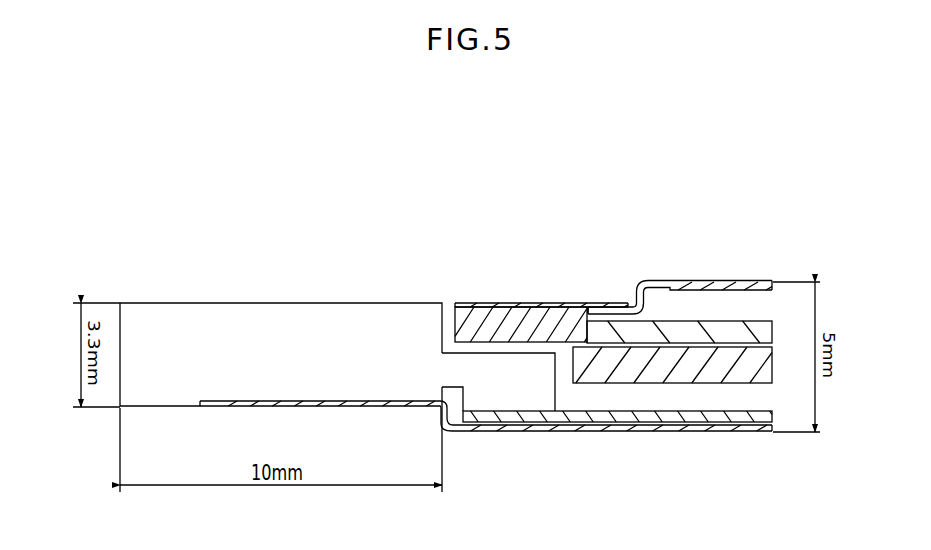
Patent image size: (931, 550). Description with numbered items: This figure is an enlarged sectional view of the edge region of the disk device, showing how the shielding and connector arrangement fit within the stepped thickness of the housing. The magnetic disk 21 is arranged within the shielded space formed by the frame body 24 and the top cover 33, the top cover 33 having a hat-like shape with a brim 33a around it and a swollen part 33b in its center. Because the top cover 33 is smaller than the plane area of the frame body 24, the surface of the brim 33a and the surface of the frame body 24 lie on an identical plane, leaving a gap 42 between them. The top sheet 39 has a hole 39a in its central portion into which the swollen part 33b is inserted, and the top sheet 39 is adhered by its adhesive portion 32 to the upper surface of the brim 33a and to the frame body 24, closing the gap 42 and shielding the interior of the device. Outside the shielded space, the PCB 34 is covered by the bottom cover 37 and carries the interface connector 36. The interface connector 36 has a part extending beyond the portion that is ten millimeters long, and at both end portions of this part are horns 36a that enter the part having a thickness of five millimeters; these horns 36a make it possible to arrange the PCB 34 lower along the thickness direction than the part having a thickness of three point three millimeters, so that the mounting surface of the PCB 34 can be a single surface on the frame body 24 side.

The magnetic disk 21 is at (717, 330).
The frame body 24 is at (485, 320).
The adhesive portion 32 is at (507, 308).
The top cover 33 is at (742, 282).
The brim 33a is at (590, 308).
The swollen part 33b is at (627, 303).
The PCB 34 is at (593, 413).
The interface connector 36 is at (313, 336).
The horns 36a is at (493, 393).
The bottom cover 37 is at (680, 428).
The top sheet 39 is at (532, 305).
The hole 39a is at (628, 305).
The gap 42 is at (581, 300).